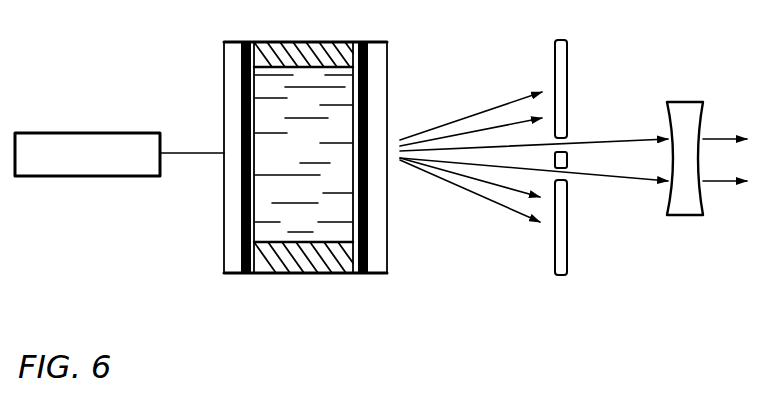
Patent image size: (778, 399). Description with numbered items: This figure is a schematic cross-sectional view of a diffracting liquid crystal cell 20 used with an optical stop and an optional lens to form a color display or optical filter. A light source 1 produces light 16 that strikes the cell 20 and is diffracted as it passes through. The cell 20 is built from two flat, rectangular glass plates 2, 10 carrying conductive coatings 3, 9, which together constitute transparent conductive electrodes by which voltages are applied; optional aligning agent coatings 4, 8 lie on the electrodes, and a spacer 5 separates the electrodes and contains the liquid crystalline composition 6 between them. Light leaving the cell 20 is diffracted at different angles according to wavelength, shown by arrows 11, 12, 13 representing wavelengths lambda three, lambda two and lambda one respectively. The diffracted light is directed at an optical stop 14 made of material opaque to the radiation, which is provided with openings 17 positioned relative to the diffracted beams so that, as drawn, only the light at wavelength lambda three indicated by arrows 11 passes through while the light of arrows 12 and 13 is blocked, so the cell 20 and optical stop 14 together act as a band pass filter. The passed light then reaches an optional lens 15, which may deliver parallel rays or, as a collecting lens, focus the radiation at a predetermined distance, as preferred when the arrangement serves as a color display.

The light source 1 is at (136, 136).
The glass plate 2 is at (230, 40).
The conductive coating 3 is at (246, 275).
The aligning agent coating 4 is at (254, 41).
The spacer 5 is at (313, 41).
The liquid crystalline composition 6 is at (310, 243).
The aligning agent coating 8 is at (355, 41).
The electrode 9 is at (362, 275).
The glass plate 10 is at (380, 41).
The arrows 11 is at (579, 149).
The arrows 12 is at (471, 151).
The arrows 13 is at (471, 151).
The optical stop 14 is at (561, 39).
The optional lens 15 is at (692, 101).
The light 16 is at (176, 153).
The openings 17 is at (568, 160).
The cell 20 is at (212, 284).